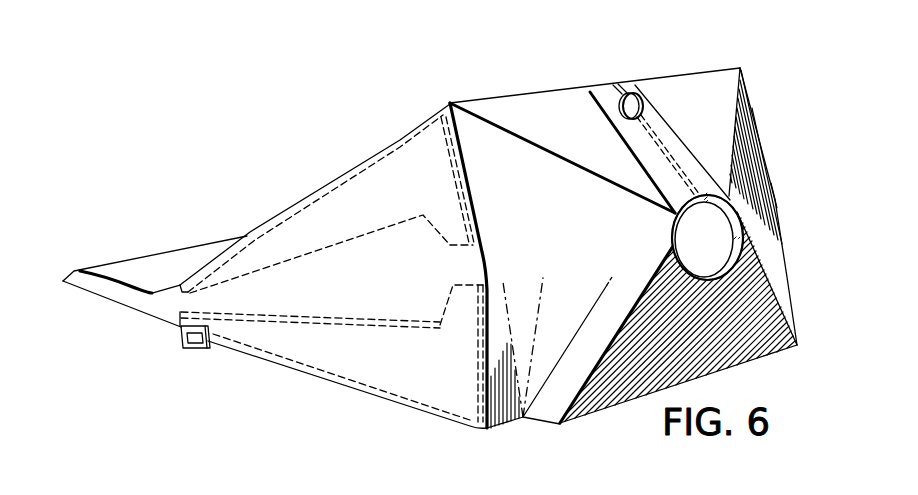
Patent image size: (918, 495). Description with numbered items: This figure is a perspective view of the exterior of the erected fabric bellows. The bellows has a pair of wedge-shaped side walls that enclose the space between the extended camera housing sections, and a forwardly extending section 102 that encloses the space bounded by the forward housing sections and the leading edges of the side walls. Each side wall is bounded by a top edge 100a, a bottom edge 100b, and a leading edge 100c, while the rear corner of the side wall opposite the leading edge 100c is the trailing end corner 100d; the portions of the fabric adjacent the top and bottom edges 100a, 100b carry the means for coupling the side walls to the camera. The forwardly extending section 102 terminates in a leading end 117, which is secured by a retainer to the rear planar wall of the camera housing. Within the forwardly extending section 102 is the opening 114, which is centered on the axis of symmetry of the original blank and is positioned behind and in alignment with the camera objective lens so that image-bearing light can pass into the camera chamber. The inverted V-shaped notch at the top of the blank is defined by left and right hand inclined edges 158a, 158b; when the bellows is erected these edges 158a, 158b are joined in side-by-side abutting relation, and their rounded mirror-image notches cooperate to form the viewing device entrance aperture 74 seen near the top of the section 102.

The viewing device entrance aperture 74 is at (631, 93).
The top edge of side wall 100a is at (303, 197).
The bottom edge of side wall 100b is at (333, 383).
The leading edge of side wall 100c is at (471, 203).
The trailing end corner of side wall 100d is at (148, 302).
The forwardly extending section 102 is at (770, 166).
The opening 114 is at (697, 225).
The leading end of forwardly extending section 117 is at (737, 267).
The left hand inclined edge of notch 158a is at (646, 133).
The right hand inclined edge of notch 158b is at (670, 152).